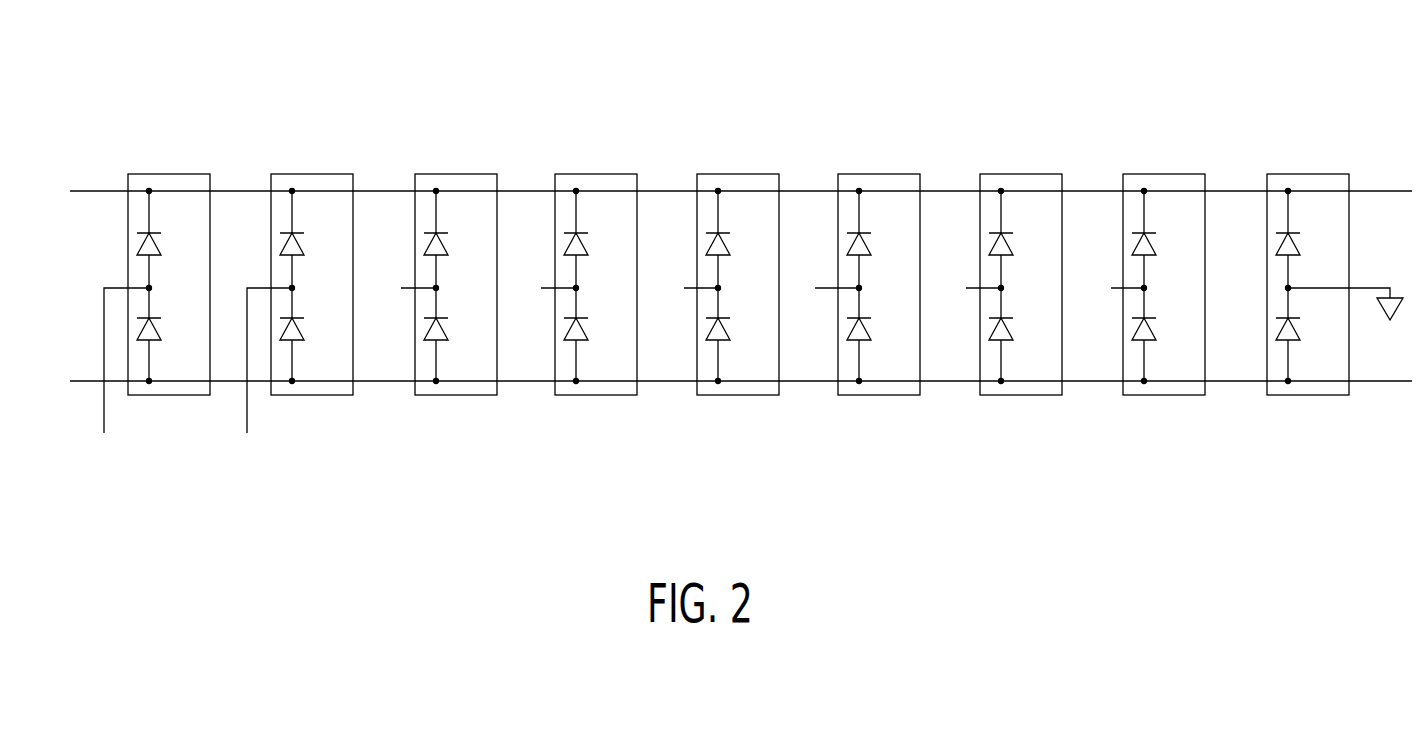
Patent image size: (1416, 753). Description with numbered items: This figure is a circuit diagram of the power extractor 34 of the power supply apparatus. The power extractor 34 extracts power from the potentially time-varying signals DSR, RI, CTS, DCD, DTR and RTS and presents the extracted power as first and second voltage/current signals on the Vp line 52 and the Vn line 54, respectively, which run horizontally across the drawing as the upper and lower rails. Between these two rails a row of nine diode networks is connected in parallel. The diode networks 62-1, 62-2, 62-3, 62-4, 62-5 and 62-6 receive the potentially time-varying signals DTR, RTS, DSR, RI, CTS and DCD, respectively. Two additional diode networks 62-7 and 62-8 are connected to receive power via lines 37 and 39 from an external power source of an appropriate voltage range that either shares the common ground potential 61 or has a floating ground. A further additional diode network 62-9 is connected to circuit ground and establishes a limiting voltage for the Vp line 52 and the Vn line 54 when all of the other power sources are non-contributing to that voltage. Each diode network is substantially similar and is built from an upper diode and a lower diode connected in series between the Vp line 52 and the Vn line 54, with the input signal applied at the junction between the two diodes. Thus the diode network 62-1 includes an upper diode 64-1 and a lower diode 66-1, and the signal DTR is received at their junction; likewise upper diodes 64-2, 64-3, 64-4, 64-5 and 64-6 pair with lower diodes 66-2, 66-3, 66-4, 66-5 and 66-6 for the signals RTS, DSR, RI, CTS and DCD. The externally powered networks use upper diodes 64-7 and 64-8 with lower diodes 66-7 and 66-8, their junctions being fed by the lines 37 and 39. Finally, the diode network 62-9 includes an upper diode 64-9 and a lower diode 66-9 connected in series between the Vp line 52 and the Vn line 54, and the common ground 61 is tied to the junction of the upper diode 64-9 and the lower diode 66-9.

The power extractor 34 is at (689, 84).
The line 37 is at (104, 420).
The line 39 is at (247, 420).
The Vp line 52 is at (543, 189).
The Vn line 54 is at (541, 379).
The common ground potential 61 is at (1363, 287).
The diode network 62-1 is at (497, 175).
The diode network 62-2 is at (637, 175).
The diode network 62-3 is at (779, 175).
The diode network 62-4 is at (920, 175).
The diode network 62-5 is at (1062, 175).
The diode network 62-6 is at (1205, 175).
The additional diode network 62-7 is at (210, 175).
The additional diode network 62-8 is at (353, 175).
The additional diode network 62-9 is at (1349, 175).
The upper diode 64-1 is at (438, 262).
The upper diode 64-2 is at (578, 262).
The upper diode 64-3 is at (720, 262).
The upper diode 64-4 is at (861, 262).
The upper diode 64-5 is at (1003, 262).
The upper diode 64-6 is at (1146, 262).
The upper diode 64-7 is at (151, 262).
The upper diode 64-8 is at (294, 262).
The upper diode 64-9 is at (1290, 262).
The lower diode 66-1 is at (438, 347).
The lower diode 66-2 is at (578, 347).
The lower diode 66-3 is at (720, 347).
The lower diode 66-4 is at (861, 347).
The lower diode 66-5 is at (1003, 347).
The lower diode 66-6 is at (1146, 347).
The lower diode 66-7 is at (151, 347).
The lower diode 66-8 is at (294, 347).
The lower diode 66-9 is at (1290, 347).